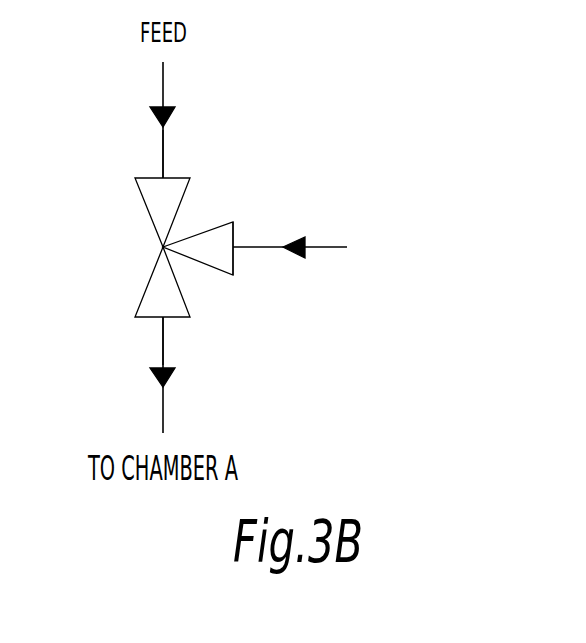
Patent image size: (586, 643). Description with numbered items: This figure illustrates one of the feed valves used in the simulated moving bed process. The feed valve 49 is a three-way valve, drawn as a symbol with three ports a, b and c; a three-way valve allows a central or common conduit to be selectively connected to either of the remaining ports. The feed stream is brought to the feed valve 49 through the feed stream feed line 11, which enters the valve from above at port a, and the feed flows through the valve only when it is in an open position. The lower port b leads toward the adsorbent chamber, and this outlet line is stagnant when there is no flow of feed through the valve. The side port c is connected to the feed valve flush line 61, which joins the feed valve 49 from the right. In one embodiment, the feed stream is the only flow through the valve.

The feed stream feed line 11 is at (163, 82).
The feed valve 49 is at (148, 280).
The feed valve flush line 61 is at (258, 247).
The valve port a is at (183, 178).
The valve port b is at (180, 320).
The valve port c is at (228, 218).